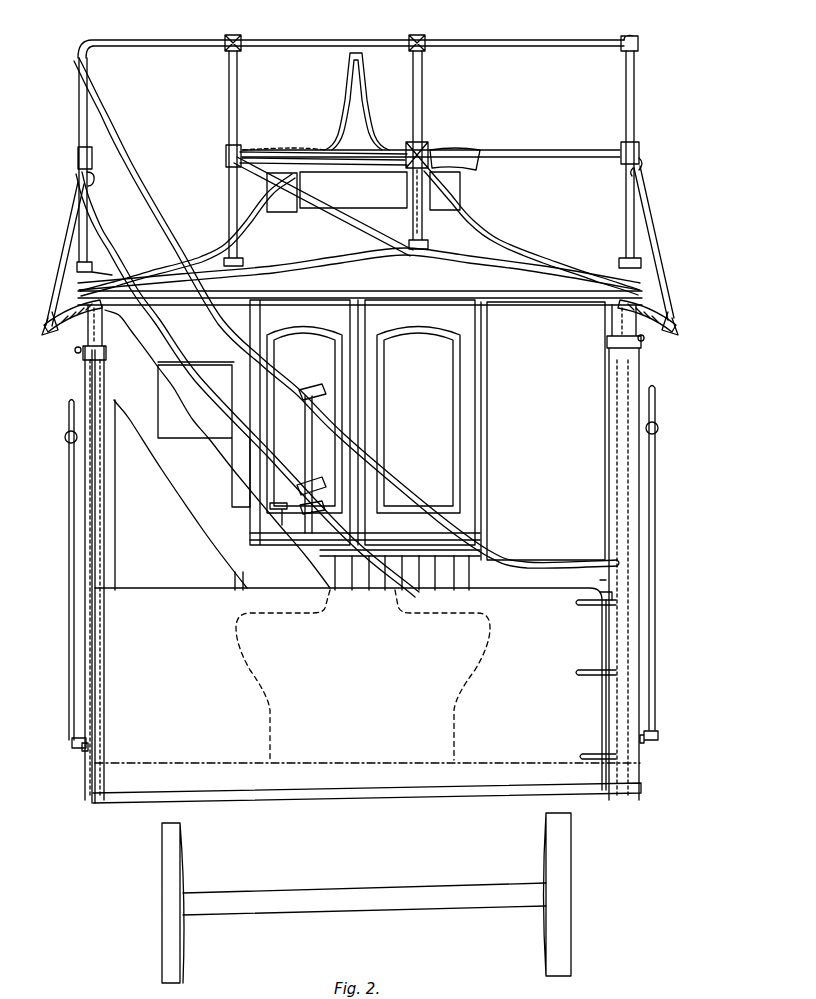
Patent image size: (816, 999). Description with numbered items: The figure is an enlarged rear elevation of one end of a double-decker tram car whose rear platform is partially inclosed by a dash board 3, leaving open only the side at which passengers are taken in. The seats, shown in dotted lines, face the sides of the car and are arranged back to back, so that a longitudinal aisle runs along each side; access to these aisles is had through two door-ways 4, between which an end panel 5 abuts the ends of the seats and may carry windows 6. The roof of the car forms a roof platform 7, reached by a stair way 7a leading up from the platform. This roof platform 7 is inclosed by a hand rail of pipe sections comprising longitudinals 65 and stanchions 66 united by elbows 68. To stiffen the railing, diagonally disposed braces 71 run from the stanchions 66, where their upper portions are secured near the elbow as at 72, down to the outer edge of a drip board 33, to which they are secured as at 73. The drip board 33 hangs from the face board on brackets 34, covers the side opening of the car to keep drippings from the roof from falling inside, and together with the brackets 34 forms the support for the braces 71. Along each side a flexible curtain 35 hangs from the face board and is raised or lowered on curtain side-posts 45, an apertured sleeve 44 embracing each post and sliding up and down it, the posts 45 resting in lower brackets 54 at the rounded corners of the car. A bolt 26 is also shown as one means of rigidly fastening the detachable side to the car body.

The dash board 3 is at (363, 675).
The door-ways 4 is at (170, 512).
The end panel 5 is at (432, 598).
The windows 6 is at (363, 420).
The roof platform 7 is at (145, 268).
The stair way 7a is at (190, 508).
The bolt 26 is at (620, 592).
The drip board 33 is at (55, 320).
The brackets 34 is at (75, 351).
The curtain 35 is at (84, 383).
The apertured sleeve 44 is at (70, 445).
The curtain side-posts 45 is at (68, 535).
The lower bracket 54 is at (78, 752).
The longitudinals 65 is at (143, 42).
The stanchions 66 is at (79, 130).
The elbows 68 is at (243, 40).
The braces 71 is at (66, 256).
The upper brace attachment 72 is at (78, 178).
The lower brace attachment 73 is at (40, 328).